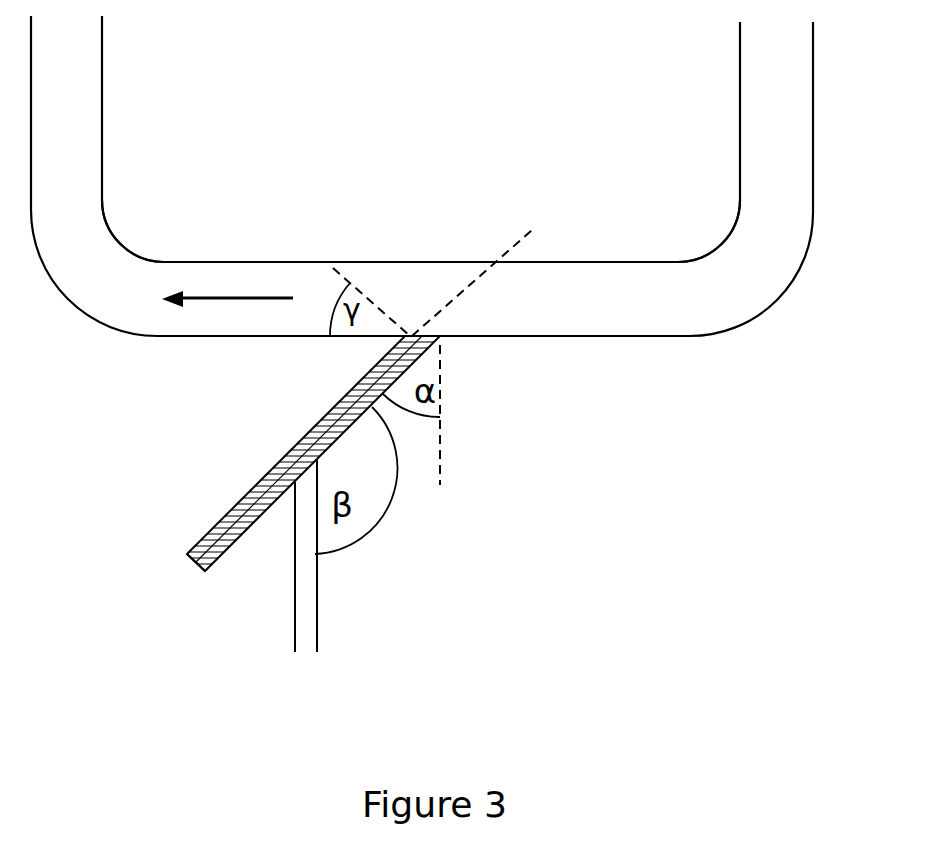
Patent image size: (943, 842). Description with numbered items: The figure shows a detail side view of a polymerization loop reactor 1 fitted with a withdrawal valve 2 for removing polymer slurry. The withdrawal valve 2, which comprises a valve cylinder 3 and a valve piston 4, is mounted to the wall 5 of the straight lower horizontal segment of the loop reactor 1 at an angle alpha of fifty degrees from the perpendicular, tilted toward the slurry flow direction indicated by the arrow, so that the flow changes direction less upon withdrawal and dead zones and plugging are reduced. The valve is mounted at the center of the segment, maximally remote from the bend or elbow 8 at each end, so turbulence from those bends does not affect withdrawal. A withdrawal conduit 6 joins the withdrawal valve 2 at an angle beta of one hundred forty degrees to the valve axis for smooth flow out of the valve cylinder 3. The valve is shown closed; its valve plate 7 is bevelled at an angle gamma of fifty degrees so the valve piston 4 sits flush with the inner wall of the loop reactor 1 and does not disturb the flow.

The loop reactor 1 is at (157, 337).
The withdrawal valve 2 is at (276, 453).
The valve cylinder 3 is at (250, 490).
The valve piston 4 is at (198, 542).
The wall 5 is at (310, 350).
The withdrawal conduit 6 is at (290, 583).
The valve plate 7 is at (423, 310).
The bend or elbow 8 is at (113, 255).